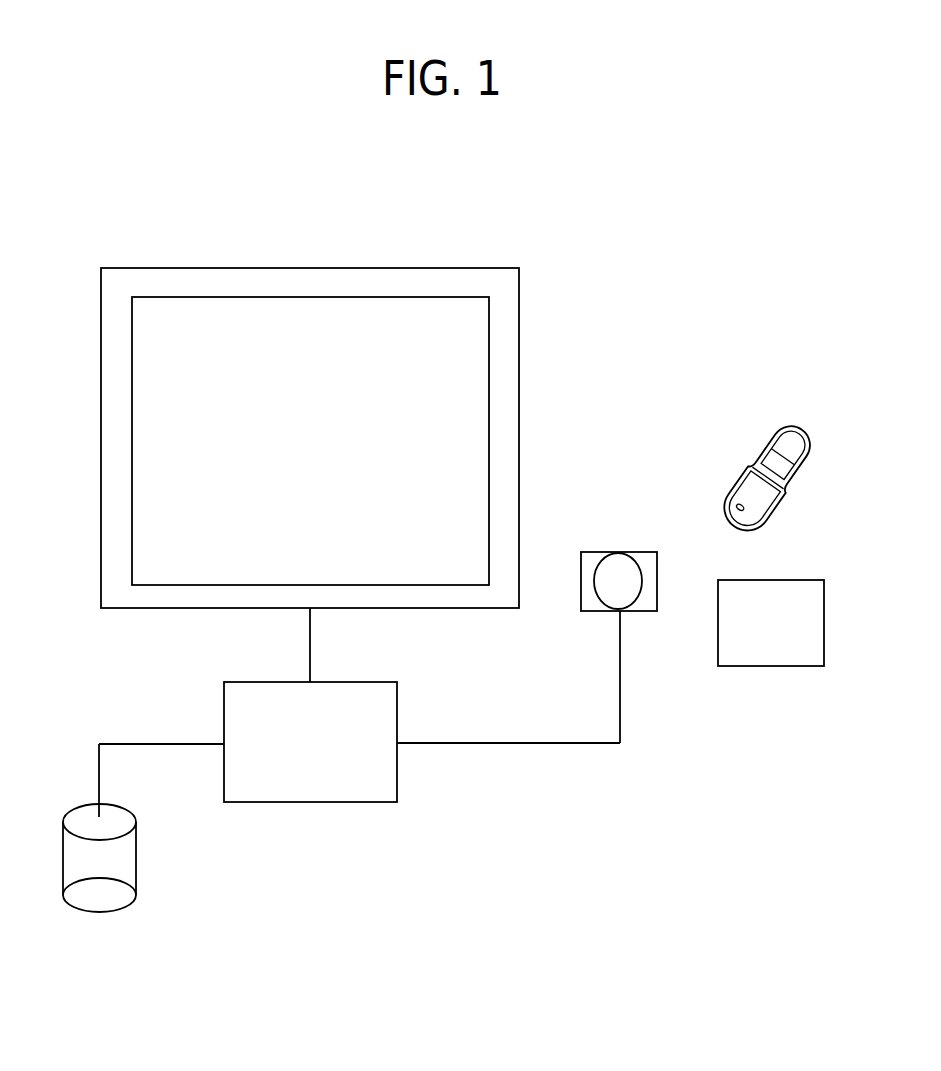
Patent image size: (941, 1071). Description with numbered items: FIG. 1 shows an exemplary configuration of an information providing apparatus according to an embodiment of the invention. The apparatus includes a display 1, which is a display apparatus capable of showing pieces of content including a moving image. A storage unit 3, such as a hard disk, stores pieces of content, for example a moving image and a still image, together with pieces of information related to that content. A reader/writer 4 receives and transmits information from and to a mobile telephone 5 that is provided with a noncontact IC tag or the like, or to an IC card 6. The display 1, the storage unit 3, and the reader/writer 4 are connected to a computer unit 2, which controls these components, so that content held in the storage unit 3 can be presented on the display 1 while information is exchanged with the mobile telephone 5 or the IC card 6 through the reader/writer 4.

The display 1 is at (519, 359).
The computer unit 2 is at (397, 778).
The storage unit 3 is at (136, 855).
The reader/writer 4 is at (612, 552).
The mobile telephone 5 is at (810, 435).
The IC card 6 is at (824, 618).